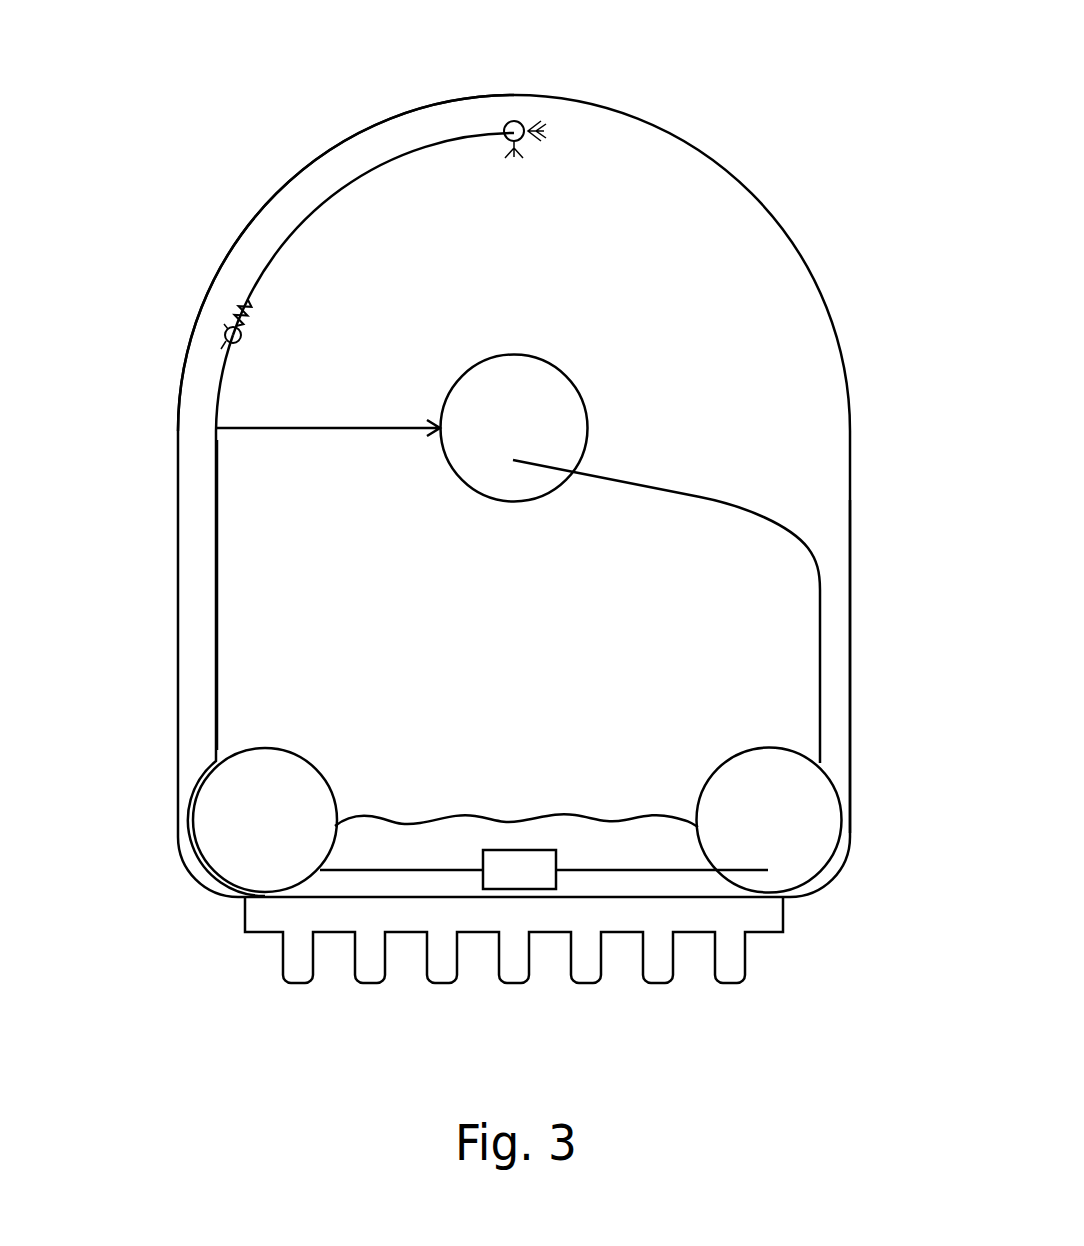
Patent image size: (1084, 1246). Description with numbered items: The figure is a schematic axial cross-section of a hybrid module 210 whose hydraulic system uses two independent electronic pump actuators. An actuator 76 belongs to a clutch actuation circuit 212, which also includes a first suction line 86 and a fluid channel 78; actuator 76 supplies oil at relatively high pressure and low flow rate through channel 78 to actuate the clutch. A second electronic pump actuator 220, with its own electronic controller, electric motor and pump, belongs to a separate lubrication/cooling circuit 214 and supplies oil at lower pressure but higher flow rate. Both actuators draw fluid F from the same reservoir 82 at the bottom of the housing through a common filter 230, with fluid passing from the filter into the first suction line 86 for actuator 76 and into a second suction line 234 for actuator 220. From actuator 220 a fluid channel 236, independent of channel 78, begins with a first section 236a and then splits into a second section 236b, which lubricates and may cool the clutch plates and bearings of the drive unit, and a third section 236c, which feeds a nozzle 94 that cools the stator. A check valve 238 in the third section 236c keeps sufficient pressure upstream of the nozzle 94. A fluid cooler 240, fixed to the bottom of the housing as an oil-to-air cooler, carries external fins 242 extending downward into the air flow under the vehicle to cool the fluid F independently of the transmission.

The hybrid module 210 is at (855, 96).
The actuator 76 is at (858, 759).
The lubrication/cooling circuit 214 is at (272, 210).
The clutch actuation circuit 212 is at (844, 628).
The fluid channel 236 is at (204, 610).
The first section 236a is at (216, 473).
The second section 236b is at (350, 426).
The third section 236c is at (398, 150).
The check valve 238 is at (219, 312).
The nozzle 94 is at (528, 116).
The fluid channel 78 is at (668, 483).
The second electronic pump actuator 220 is at (192, 790).
The reservoir 82 is at (684, 776).
The second suction line 234 is at (408, 863).
The first suction line 86 is at (615, 868).
The common filter 230 is at (513, 868).
The fluid F is at (390, 857).
The fluid cooler 240 is at (790, 940).
The external fins 242 is at (445, 968).